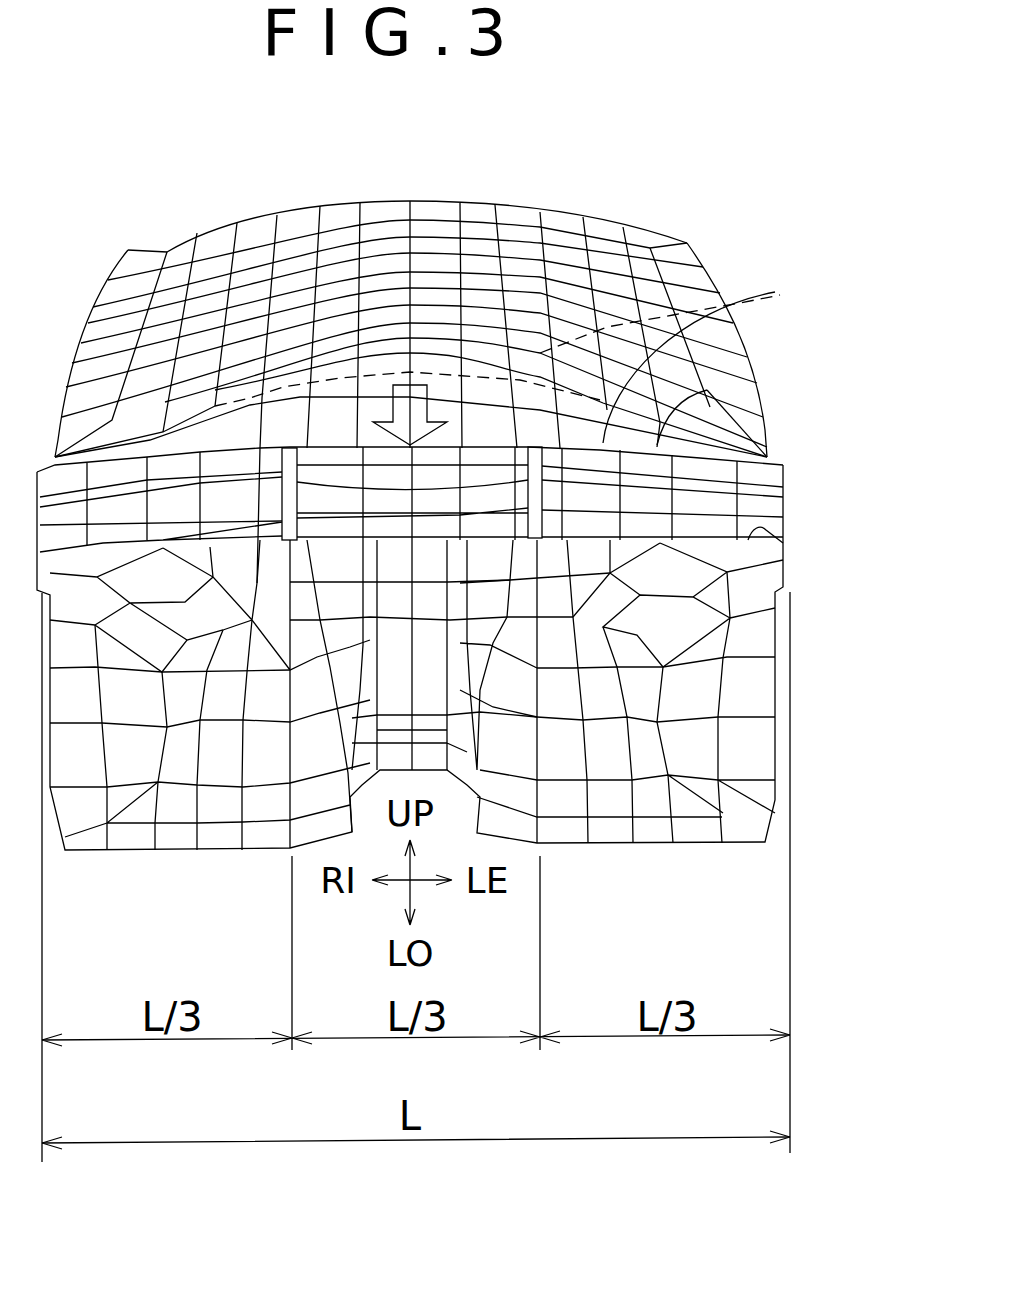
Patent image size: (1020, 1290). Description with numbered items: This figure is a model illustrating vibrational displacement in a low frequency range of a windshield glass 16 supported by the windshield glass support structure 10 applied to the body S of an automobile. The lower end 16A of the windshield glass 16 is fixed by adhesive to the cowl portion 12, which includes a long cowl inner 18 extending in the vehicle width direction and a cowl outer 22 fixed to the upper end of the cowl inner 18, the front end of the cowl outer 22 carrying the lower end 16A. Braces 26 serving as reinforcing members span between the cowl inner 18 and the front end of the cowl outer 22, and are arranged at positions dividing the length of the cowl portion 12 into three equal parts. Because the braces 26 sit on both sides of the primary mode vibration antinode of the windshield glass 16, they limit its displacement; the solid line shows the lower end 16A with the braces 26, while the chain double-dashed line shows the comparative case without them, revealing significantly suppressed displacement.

The windshield glass support structure 10 is at (410, 657).
The cowl portion 12 is at (801, 515).
The windshield glass 16 is at (565, 235).
The lower end 16A is at (778, 294).
The cowl inner 18 is at (787, 543).
The cowl outer 22 is at (707, 390).
The brace 26 is at (535, 490).
The body S is at (706, 210).